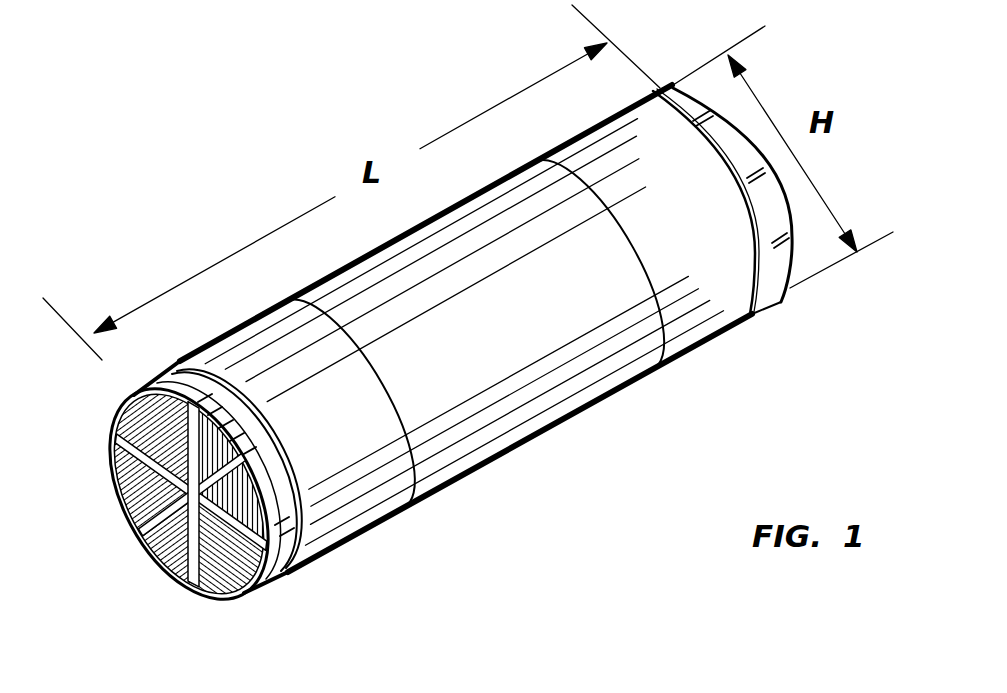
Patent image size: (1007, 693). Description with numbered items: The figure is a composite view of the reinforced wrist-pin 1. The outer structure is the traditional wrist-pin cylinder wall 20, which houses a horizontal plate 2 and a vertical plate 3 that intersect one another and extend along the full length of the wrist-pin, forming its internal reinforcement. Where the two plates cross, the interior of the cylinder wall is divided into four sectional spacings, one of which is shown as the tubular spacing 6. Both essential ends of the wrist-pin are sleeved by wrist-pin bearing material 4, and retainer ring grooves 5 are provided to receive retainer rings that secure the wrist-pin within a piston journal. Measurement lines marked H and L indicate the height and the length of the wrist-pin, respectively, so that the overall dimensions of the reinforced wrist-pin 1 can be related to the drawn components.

The reinforced wrist-pin 1 is at (575, 380).
The horizontal plate 2 is at (123, 447).
The vertical plate 3 is at (192, 572).
The wrist-pin bearing material 4 is at (383, 492).
The retainer ring grooves 5 is at (290, 568).
The tubular spacing 6 is at (147, 444).
The wrist-pin cylinder wall 20 is at (246, 594).